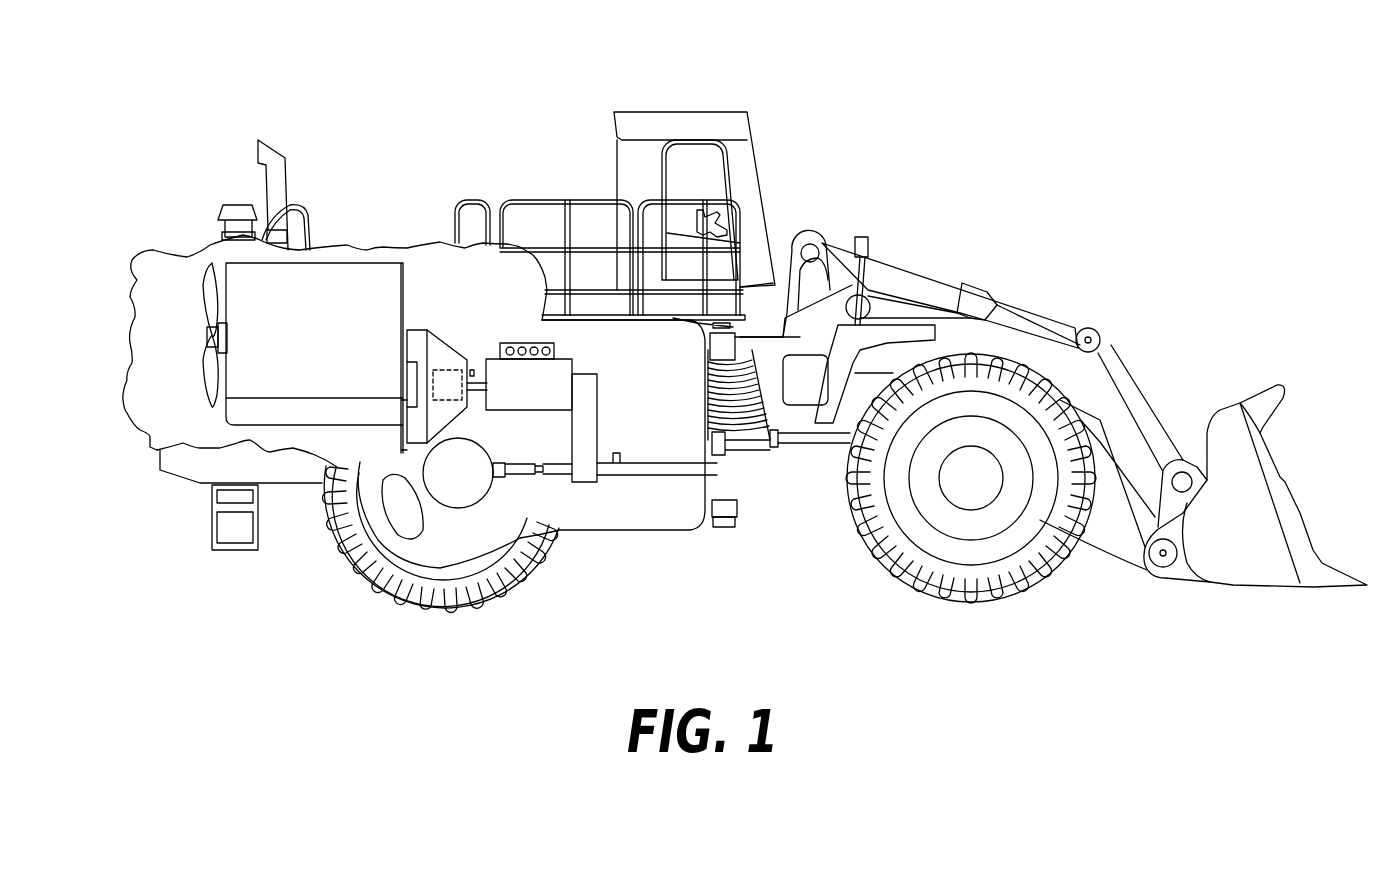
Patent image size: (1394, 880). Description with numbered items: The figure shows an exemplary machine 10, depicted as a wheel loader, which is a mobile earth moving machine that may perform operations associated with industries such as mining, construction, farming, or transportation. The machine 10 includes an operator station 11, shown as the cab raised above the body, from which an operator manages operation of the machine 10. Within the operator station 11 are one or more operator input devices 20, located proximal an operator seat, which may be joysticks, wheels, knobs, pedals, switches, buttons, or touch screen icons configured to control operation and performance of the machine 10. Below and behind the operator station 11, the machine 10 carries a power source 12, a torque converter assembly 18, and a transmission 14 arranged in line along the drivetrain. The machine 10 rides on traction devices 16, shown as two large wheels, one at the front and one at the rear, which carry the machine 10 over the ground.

The machine 10 is at (1064, 166).
The operator station 11 is at (746, 102).
The power source 12 is at (367, 257).
The transmission 14 is at (574, 367).
The traction devices 16 is at (502, 600).
The torque converter assembly 18 is at (432, 352).
The operator input devices 20 is at (705, 185).